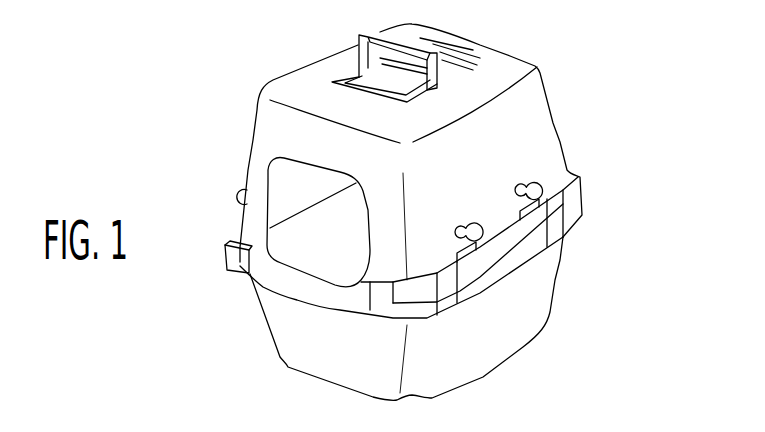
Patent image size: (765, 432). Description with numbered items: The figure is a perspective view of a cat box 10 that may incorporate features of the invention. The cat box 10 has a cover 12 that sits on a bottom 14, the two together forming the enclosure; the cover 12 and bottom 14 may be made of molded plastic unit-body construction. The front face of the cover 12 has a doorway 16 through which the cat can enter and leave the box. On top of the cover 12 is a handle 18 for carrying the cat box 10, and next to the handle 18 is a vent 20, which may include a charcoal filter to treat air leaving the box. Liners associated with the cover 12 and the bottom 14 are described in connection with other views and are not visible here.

The cat box 10 is at (235, 83).
The cover 12 is at (543, 127).
The bottom 14 is at (537, 273).
The doorway 16 is at (292, 182).
The handle 18 is at (360, 35).
The vent 20 is at (450, 54).